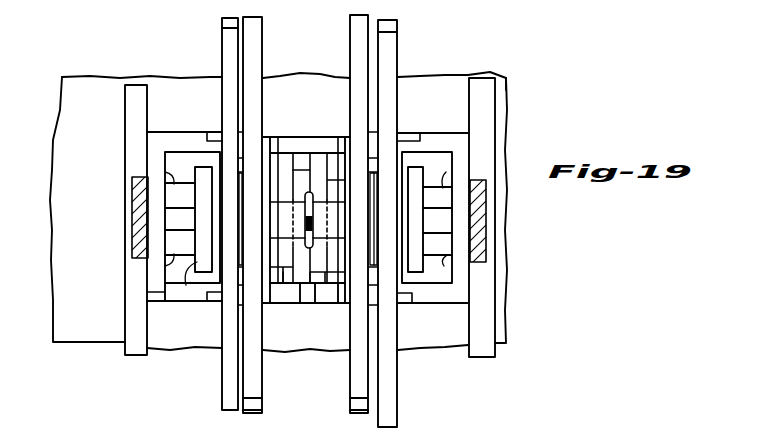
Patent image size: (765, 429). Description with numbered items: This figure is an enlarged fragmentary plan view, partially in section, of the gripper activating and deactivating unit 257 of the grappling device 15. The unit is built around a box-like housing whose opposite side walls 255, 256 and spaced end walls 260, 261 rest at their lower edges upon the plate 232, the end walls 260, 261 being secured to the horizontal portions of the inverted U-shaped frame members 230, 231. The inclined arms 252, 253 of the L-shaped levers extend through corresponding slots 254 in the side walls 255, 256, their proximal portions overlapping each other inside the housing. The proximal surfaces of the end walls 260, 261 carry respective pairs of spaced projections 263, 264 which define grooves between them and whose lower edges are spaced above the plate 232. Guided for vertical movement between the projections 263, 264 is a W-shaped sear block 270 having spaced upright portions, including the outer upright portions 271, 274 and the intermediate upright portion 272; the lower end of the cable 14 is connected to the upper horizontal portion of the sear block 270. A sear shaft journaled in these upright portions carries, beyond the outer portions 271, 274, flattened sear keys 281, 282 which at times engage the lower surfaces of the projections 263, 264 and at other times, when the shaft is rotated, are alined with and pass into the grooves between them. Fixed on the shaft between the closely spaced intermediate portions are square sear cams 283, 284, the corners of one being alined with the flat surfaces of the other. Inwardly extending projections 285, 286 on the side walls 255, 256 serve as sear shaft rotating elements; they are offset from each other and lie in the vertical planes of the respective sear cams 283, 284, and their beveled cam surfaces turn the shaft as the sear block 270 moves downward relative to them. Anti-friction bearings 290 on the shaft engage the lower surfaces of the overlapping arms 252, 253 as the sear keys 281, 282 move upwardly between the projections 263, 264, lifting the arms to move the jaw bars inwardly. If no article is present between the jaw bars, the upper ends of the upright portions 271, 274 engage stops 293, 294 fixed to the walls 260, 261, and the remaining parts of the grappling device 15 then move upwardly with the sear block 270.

The cable 14 is at (305, 214).
The grappling device 15 is at (508, 80).
The frame member 230 is at (125, 107).
The frame member 231 is at (488, 101).
The plate 232 is at (99, 77).
The arm 252 is at (352, 384).
The arm 253 is at (222, 47).
The slot 254 is at (208, 124).
The side wall 255 is at (173, 132).
The side wall 256 is at (166, 316).
The gripper activating and deactivating unit 257 is at (143, 297).
The end wall 260 is at (153, 278).
The end wall 261 is at (460, 281).
The projections 263 is at (165, 172).
The projections 264 is at (446, 172).
The sear block 270 is at (428, 160).
The upright portion 271 is at (191, 293).
The intermediate upright portion 272 is at (297, 305).
The upright portion 274 is at (452, 307).
The sear key 281 is at (446, 230).
The sear key 282 is at (173, 219).
The sear cam 283 is at (337, 152).
The sear cam 284 is at (306, 317).
The projection 285 is at (320, 305).
The projection 286 is at (300, 168).
The anti-friction bearings 290 is at (273, 150).
The stop 293 is at (132, 193).
The stop 294 is at (484, 197).